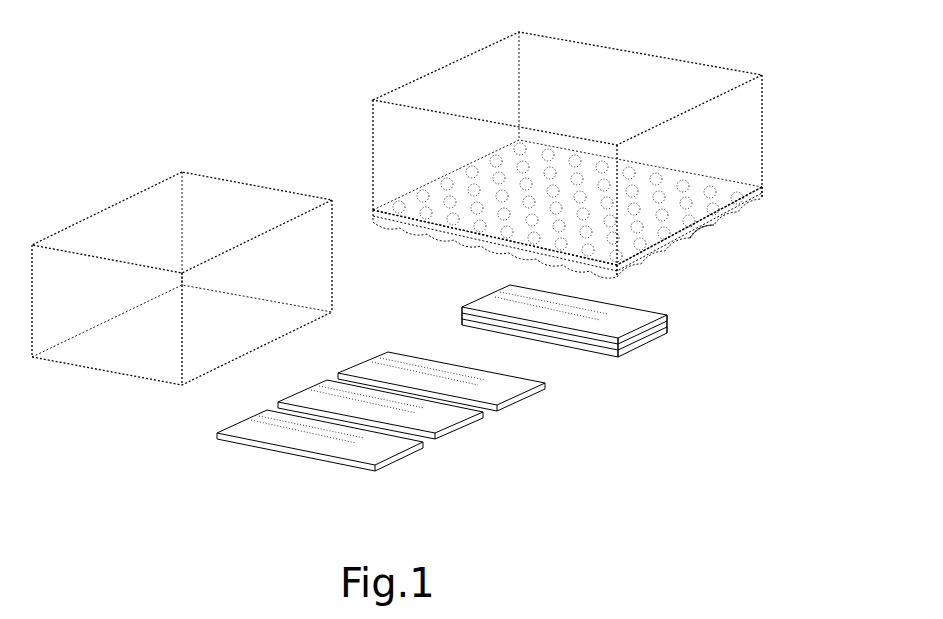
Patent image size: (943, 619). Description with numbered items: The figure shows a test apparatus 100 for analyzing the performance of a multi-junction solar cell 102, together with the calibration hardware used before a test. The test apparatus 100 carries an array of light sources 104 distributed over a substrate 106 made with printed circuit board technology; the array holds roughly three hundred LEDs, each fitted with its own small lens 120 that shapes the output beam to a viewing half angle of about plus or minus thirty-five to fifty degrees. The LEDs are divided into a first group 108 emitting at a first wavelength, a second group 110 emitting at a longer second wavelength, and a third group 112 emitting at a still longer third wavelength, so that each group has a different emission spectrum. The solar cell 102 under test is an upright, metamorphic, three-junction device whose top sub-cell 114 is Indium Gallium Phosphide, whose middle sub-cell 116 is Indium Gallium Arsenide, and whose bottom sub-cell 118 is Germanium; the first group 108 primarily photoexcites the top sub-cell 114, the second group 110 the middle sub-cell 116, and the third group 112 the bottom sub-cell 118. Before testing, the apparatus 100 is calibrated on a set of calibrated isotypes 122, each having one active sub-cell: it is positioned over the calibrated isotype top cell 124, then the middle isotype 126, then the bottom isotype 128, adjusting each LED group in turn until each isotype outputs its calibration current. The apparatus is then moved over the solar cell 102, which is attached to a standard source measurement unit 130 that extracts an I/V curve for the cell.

The test apparatus 100 is at (389, 68).
The multi-junction solar cell 102 is at (623, 363).
The array of light sources 104 is at (684, 180).
The substrate 106 is at (763, 190).
The first group of light sources 108 is at (767, 212).
The second group of light sources 110 is at (707, 237).
The third group of light sources 112 is at (637, 268).
The top sub-cell 114 is at (673, 315).
The middle sub-cell 116 is at (673, 322).
The bottom sub-cell 118 is at (673, 329).
The lens 120 is at (375, 225).
The calibrated isotypes 122 is at (337, 423).
The calibrated isotype top cell 124 is at (520, 402).
The middle isotype 126 is at (460, 430).
The bottom isotype 128 is at (407, 458).
The source measurement unit 130 is at (146, 223).